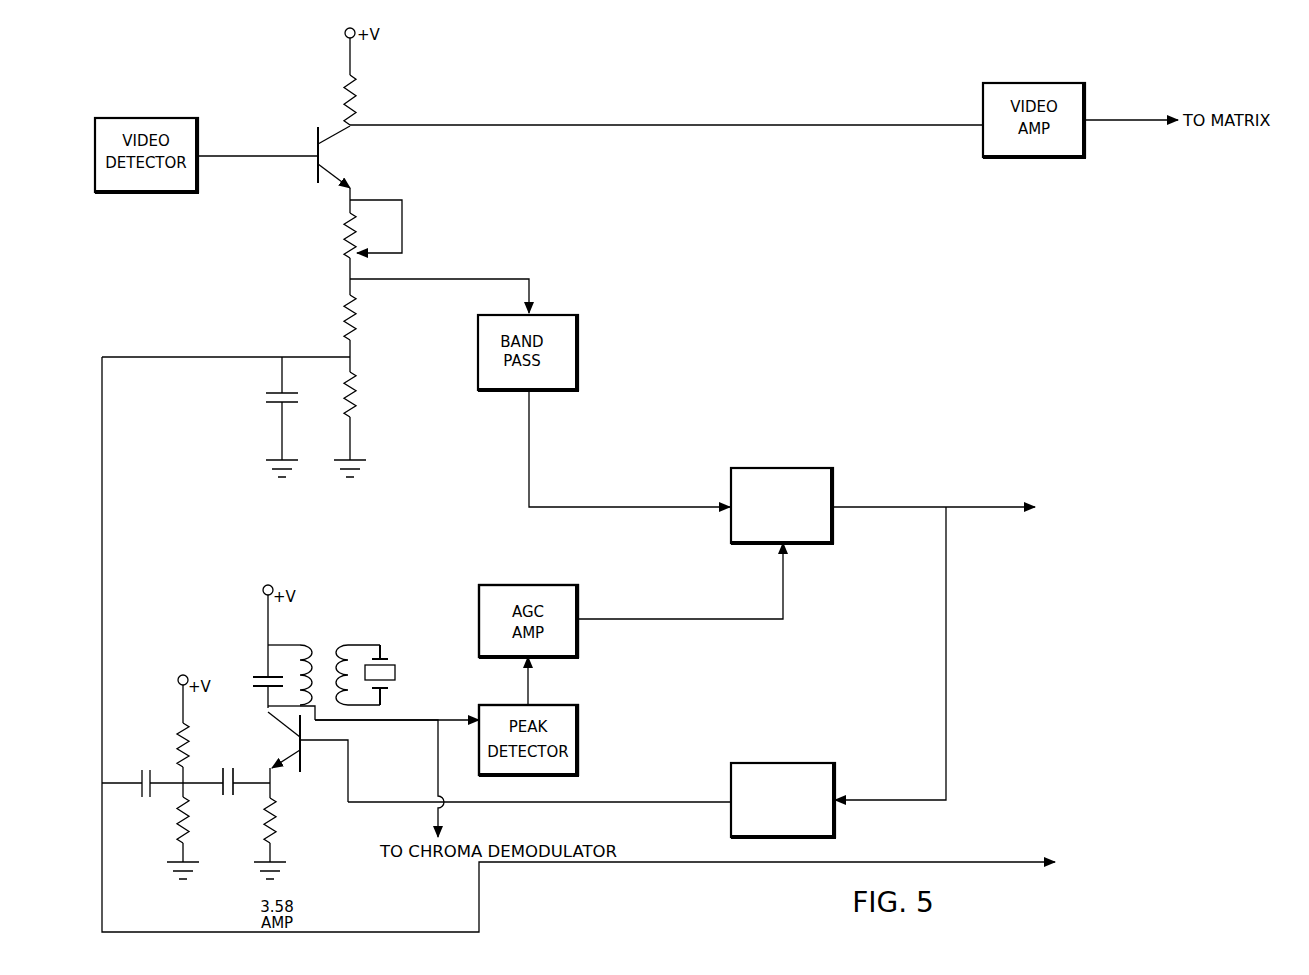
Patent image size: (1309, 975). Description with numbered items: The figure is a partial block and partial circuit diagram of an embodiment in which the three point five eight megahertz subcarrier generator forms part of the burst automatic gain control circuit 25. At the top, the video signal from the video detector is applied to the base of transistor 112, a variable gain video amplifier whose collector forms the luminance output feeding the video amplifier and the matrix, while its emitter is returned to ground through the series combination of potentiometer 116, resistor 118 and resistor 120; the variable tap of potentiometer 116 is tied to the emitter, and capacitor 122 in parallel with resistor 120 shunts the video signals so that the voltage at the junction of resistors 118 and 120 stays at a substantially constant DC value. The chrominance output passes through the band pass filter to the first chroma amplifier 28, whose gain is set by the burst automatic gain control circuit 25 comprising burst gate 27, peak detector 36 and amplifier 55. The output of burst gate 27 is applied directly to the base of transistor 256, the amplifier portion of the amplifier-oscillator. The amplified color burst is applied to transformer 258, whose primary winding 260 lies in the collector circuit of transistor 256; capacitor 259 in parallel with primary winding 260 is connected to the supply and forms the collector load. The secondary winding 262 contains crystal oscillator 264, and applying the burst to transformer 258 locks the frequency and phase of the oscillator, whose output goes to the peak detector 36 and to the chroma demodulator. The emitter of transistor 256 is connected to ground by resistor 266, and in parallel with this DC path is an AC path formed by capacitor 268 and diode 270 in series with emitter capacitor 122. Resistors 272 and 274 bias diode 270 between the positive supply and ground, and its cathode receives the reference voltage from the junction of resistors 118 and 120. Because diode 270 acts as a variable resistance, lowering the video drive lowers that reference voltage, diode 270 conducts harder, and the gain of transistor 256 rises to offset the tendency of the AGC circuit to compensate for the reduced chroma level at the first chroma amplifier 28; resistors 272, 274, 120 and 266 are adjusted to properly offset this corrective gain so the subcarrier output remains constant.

The transistor 112 is at (330, 152).
The potentiometer 116 is at (346, 237).
The resistor 118 is at (356, 331).
The resistor 120 is at (357, 386).
The capacitor 122 is at (281, 389).
The first chroma amplifier 28 is at (806, 468).
The amplifier 55 is at (578, 634).
The detector 36 is at (548, 705).
The burst gate 27 is at (830, 763).
The burst automatic gain control circuit 25 is at (857, 653).
The transistor 256 is at (301, 771).
The transformer 258 is at (324, 656).
The capacitor 259 is at (263, 677).
The primary winding 260 is at (311, 645).
The secondary winding 262 is at (355, 645).
The crystal oscillator 264 is at (397, 673).
The resistor 266 is at (286, 830).
The capacitor 268 is at (237, 797).
The diode 270 is at (150, 781).
The resistor 272 is at (191, 749).
The resistor 274 is at (177, 831).